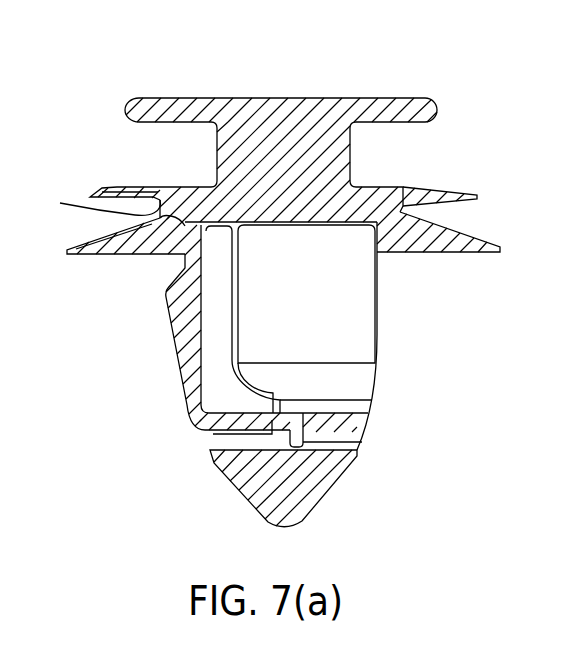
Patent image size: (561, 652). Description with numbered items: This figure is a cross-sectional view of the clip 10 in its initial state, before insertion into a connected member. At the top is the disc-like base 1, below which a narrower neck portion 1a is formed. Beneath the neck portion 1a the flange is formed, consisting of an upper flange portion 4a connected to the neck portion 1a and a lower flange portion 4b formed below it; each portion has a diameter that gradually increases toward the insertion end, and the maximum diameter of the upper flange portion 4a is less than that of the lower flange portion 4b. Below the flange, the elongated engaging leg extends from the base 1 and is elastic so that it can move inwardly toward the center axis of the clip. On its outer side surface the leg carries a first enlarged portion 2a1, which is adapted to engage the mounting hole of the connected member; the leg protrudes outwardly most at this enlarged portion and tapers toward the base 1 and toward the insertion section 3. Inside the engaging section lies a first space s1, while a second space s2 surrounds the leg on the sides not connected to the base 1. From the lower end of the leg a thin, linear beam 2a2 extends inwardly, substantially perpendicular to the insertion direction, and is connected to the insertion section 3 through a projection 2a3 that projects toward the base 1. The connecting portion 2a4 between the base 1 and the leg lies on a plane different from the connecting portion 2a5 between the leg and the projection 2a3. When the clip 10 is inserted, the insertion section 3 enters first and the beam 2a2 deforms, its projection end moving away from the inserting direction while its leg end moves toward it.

The clip 10 is at (148, 77).
The base 1 is at (377, 107).
The neck portion 1a is at (340, 146).
The first enlarged portion 2a1 is at (176, 297).
The beam 2a2 is at (245, 413).
The projection 2a3 is at (303, 432).
The connecting portion 2a4 is at (100, 208).
The connecting portion 2a5 is at (293, 420).
The insertion section 3 is at (233, 480).
The upper flange portion 4a is at (95, 196).
The lower flange portion 4b is at (88, 241).
The first space s1 is at (306, 294).
The second space s2 is at (218, 434).